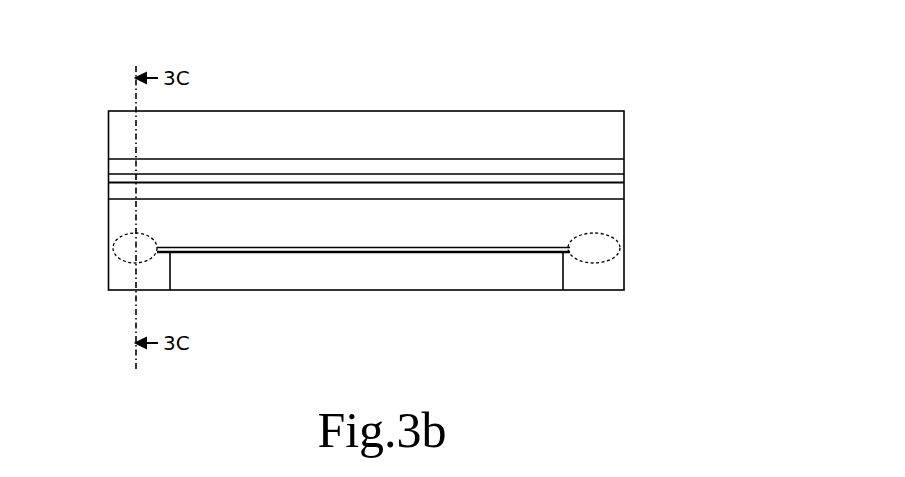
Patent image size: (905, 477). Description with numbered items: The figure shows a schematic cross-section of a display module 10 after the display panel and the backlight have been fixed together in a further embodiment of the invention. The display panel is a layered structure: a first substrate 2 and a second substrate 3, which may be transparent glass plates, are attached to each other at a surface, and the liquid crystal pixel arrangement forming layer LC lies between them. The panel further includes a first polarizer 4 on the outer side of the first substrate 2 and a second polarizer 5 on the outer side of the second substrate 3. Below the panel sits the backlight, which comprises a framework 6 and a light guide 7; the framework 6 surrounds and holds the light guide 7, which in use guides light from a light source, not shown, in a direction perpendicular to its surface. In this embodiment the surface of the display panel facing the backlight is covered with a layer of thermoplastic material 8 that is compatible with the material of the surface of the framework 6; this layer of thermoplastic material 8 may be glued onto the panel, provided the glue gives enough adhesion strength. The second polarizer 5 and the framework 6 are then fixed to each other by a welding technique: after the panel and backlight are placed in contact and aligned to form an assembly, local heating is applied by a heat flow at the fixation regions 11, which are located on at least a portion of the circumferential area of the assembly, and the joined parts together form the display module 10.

The display module 10 is at (464, 80).
The first polarizer 4 is at (457, 144).
The first substrate 2 is at (608, 164).
The liquid crystal pixel arrangement layer LC is at (120, 178).
The second substrate 3 is at (608, 192).
The second polarizer 5 is at (457, 234).
The layer of thermoplastic material 8 is at (272, 249).
The light guide 7 is at (457, 282).
The framework 6 is at (579, 276).
The fixation regions 11 is at (130, 247).